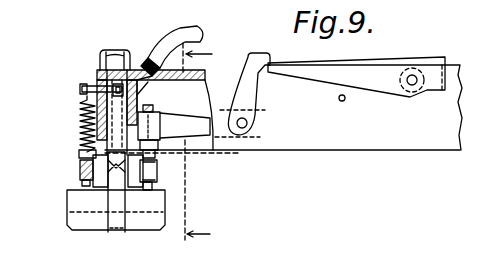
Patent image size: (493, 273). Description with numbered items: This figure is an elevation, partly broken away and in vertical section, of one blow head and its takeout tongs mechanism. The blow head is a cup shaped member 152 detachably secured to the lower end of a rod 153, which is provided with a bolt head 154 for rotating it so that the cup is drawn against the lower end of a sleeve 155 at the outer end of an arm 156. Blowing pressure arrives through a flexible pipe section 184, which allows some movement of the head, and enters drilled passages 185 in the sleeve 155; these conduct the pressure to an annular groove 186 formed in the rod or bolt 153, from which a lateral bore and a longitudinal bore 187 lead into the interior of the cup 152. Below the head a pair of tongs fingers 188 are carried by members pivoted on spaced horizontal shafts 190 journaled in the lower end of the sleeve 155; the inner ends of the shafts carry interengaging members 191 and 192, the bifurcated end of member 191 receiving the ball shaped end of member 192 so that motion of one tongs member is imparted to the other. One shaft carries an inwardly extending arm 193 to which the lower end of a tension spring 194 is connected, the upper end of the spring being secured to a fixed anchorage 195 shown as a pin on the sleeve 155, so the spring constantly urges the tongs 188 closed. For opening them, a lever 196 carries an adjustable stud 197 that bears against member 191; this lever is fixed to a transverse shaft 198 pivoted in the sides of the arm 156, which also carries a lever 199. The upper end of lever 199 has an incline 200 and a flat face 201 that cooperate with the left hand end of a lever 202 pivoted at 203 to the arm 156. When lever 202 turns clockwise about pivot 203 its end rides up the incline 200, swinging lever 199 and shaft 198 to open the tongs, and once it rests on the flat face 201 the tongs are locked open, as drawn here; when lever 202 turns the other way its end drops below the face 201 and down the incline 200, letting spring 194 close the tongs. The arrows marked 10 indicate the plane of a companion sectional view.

The section line 10 is at (205, 144).
The cup shaped member 152 is at (75, 222).
The rod 153 is at (157, 118).
The bolt head 154 is at (121, 52).
The sleeve 155 is at (100, 72).
The arm 156 is at (336, 152).
The flexible section 184 is at (175, 40).
The drilled passages 185 is at (143, 90).
The annular groove 186 is at (102, 80).
The longitudinal bore 187 is at (80, 130).
The tongs fingers 188 is at (120, 220).
The horizontal shafts 190 is at (82, 170).
The interengaging member 191 is at (155, 182).
The interengaging member 192 is at (157, 170).
The inwardly extending arm 193 is at (84, 182).
The tension spring 194 is at (80, 150).
The fixed anchorage 195 is at (83, 90).
The lever 196 is at (197, 133).
The adjustable stud 197 is at (158, 160).
The transverse shaft 198 is at (247, 125).
The lever 199 is at (244, 80).
The incline 200 is at (264, 80).
The flat face 201 is at (268, 75).
The lever 202 is at (370, 70).
The pivot 203 is at (405, 87).